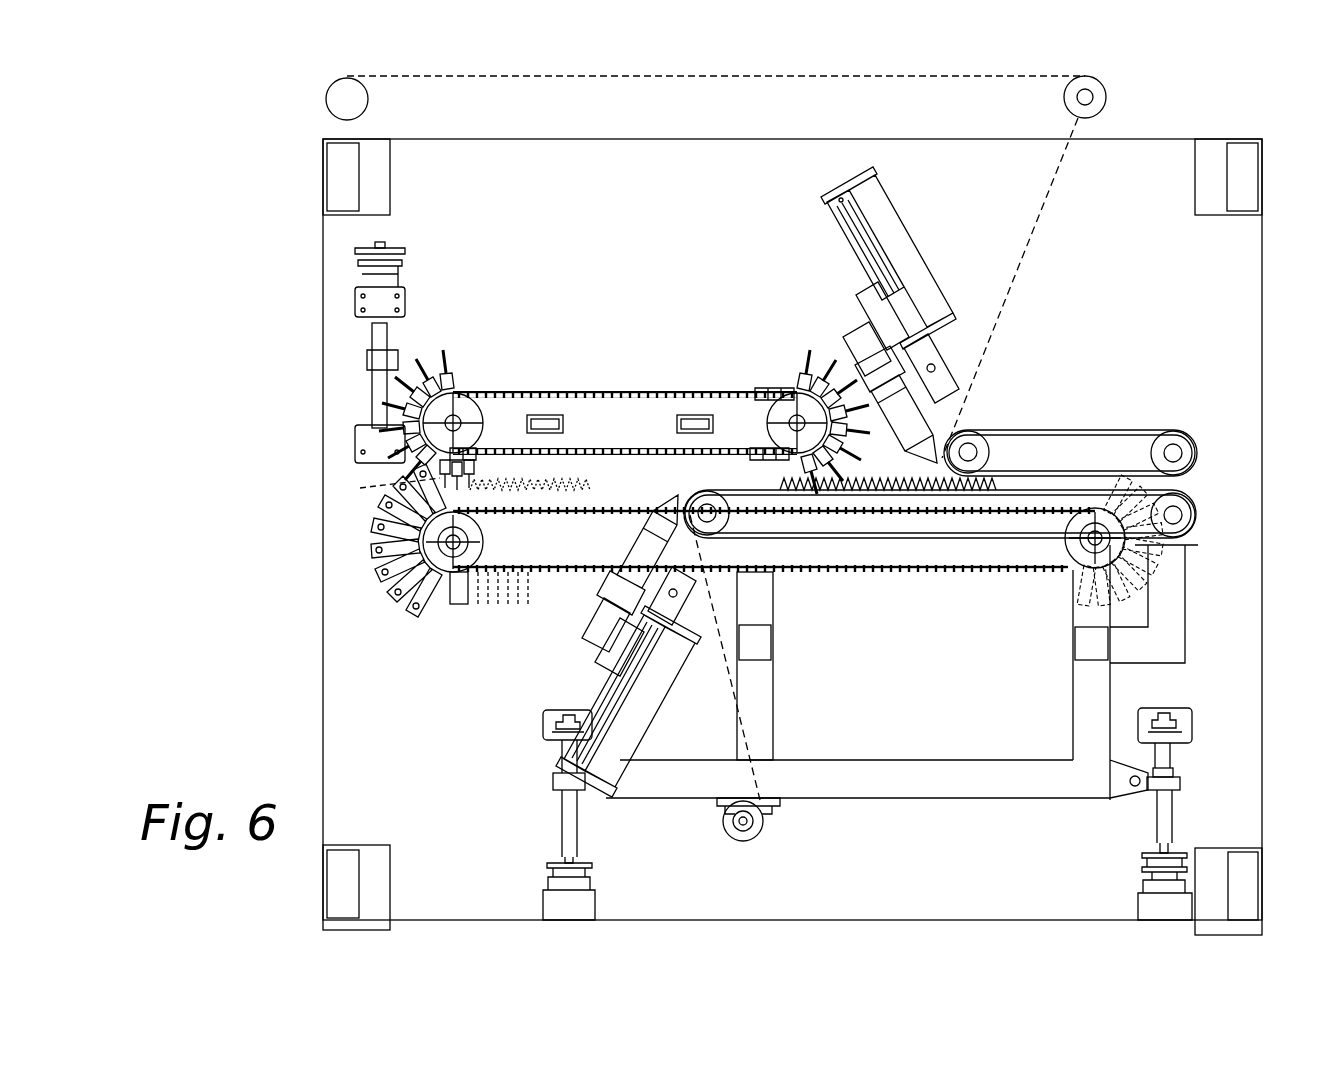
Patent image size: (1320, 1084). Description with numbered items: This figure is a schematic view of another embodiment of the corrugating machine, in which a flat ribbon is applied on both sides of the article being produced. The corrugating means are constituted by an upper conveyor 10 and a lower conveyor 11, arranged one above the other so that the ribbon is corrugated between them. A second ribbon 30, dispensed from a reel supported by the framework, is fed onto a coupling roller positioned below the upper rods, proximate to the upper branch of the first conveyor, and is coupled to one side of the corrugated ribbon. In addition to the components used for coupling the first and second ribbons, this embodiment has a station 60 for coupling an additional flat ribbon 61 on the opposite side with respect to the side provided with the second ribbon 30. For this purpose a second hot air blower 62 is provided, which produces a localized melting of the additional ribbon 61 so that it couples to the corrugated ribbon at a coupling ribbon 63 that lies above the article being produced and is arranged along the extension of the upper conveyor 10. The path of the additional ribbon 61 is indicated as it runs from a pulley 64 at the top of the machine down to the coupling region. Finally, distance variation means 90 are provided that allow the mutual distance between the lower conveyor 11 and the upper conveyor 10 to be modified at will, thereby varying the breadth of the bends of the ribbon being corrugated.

The upper conveyor 10 is at (706, 388).
The lower conveyor 11 is at (1030, 578).
The second ribbon 30 is at (716, 625).
The station 60 is at (1052, 408).
The additional flat ribbon 61 is at (1047, 228).
The second hot air blower 62 is at (915, 417).
The coupling ribbon 63 is at (1108, 430).
The pulley 64 is at (1112, 100).
The distance variation means 90 is at (373, 378).